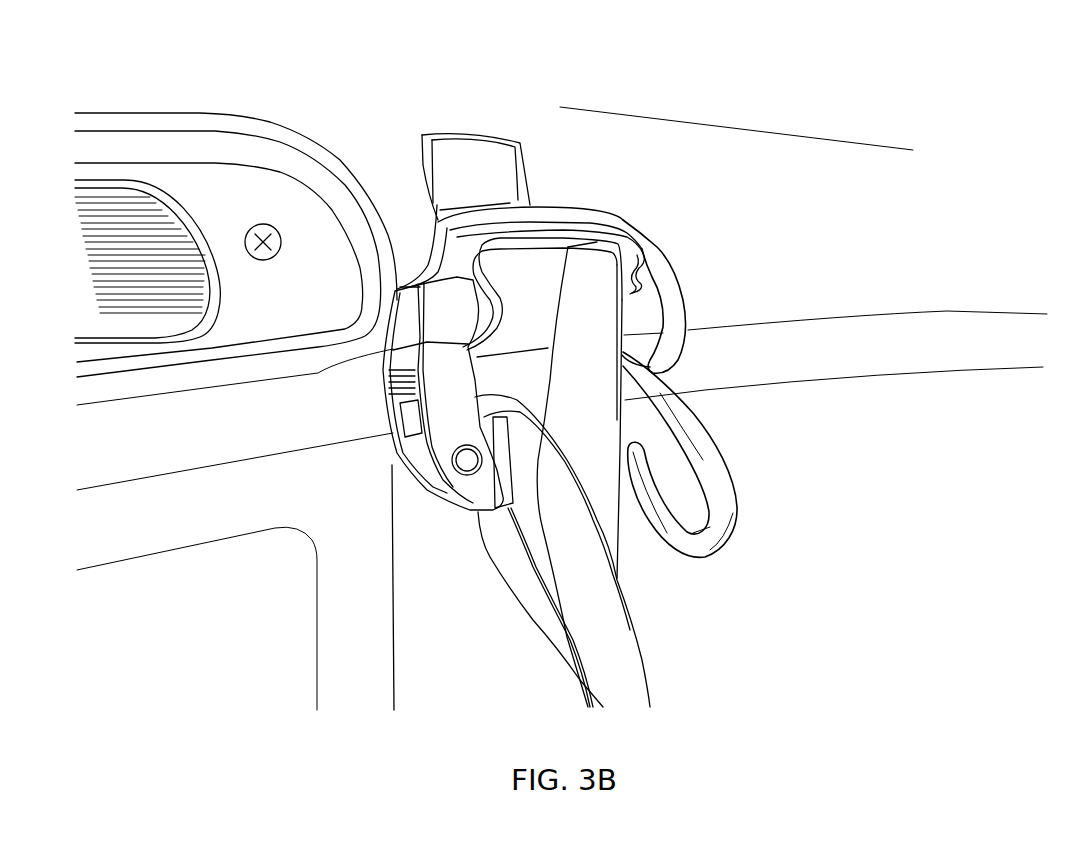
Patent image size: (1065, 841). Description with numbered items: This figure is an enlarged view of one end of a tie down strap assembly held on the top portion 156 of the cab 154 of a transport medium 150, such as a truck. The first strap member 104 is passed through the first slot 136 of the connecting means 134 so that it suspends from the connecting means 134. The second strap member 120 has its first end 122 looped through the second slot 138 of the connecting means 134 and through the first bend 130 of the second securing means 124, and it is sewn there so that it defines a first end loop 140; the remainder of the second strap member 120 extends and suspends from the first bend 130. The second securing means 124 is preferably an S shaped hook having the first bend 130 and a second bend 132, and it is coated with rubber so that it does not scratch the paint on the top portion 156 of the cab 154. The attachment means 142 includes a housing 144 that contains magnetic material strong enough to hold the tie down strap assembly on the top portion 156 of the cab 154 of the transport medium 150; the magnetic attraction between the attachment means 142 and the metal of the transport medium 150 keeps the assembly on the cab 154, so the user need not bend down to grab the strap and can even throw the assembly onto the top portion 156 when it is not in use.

The first strap member 104 is at (525, 612).
The second strap member 120 is at (487, 302).
The first end 122 is at (645, 243).
The second securing means 124 is at (747, 454).
The first bend 130 is at (681, 280).
The second bend 132 is at (737, 500).
The connecting means 134 is at (366, 439).
The first slot 136 is at (493, 513).
The second slot 138 is at (393, 345).
The first end loop 140 is at (480, 303).
The attachment means 142 is at (484, 128).
The housing 144 is at (422, 162).
The transport medium 150 is at (142, 108).
The cab 154 is at (745, 127).
The top portion 156 is at (810, 150).